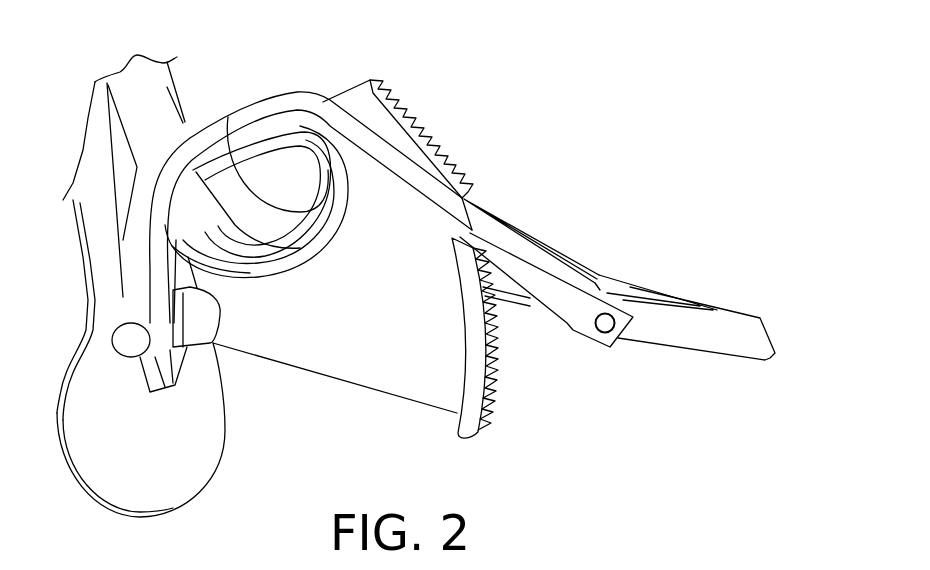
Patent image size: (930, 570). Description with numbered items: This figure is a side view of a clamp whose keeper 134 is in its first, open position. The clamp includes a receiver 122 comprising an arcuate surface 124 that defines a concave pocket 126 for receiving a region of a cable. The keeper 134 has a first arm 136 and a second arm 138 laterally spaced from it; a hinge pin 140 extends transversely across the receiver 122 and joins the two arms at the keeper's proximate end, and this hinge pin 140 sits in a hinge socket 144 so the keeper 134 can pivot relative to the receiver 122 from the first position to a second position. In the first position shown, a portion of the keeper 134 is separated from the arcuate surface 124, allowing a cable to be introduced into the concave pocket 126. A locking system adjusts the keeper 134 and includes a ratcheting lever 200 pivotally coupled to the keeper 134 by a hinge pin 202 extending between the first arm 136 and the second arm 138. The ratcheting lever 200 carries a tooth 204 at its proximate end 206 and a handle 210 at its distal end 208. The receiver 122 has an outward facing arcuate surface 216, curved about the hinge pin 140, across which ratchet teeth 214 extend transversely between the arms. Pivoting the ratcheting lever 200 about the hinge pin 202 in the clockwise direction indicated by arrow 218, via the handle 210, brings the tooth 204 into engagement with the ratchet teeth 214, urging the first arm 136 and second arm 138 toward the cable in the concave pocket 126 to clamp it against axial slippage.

The receiver 122 is at (314, 354).
The arcuate surface 124 is at (215, 240).
The concave pocket 126 is at (290, 218).
The keeper 134 is at (525, 232).
The first arm 136 is at (300, 100).
The second arm 138 is at (262, 165).
The hinge pin 140 is at (165, 387).
The hinge socket 144 is at (215, 325).
The ratcheting lever 200 is at (723, 337).
The hinge pin 202 is at (607, 327).
The tooth 204 is at (513, 297).
The proximate end 206 is at (490, 183).
The distal end 208 is at (797, 362).
The handle 210 is at (733, 317).
The ratchet teeth 214 is at (460, 155).
The outward facing arcuate surface 216 is at (450, 290).
The arrow 218 is at (632, 372).